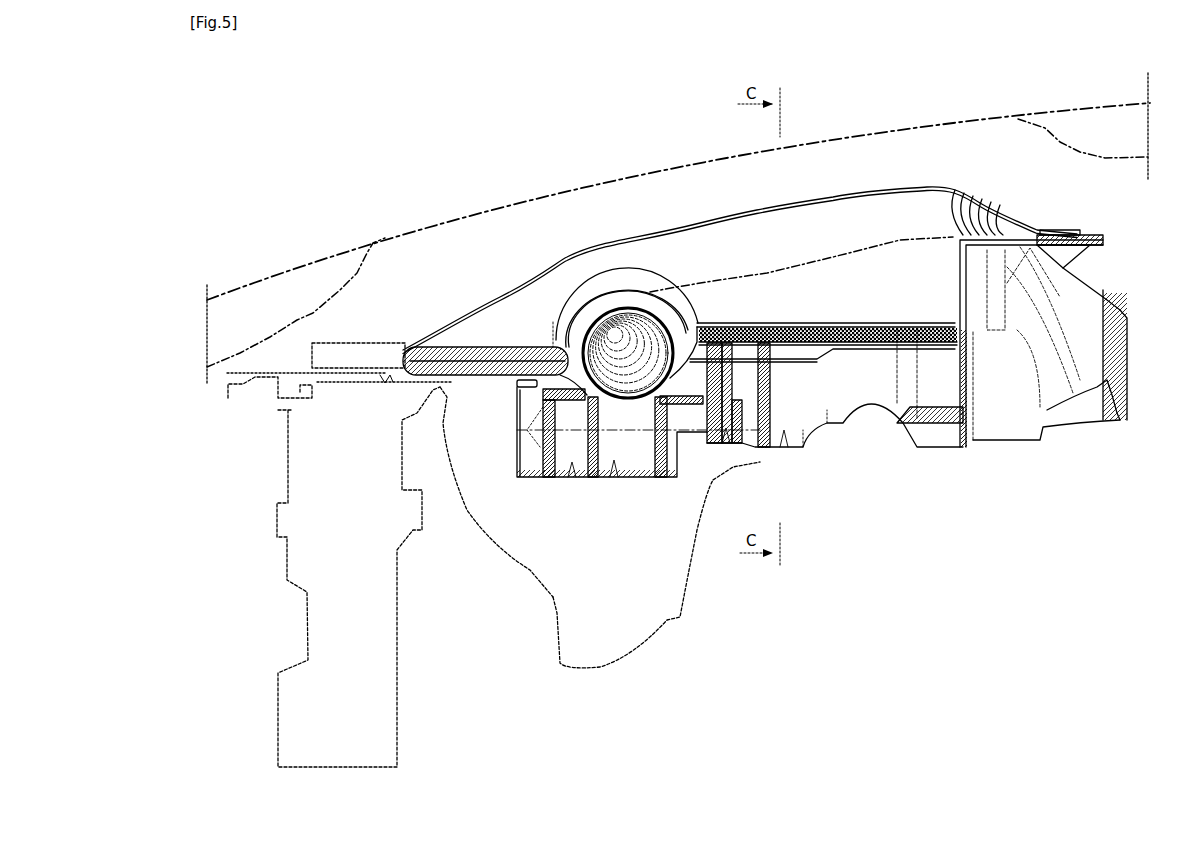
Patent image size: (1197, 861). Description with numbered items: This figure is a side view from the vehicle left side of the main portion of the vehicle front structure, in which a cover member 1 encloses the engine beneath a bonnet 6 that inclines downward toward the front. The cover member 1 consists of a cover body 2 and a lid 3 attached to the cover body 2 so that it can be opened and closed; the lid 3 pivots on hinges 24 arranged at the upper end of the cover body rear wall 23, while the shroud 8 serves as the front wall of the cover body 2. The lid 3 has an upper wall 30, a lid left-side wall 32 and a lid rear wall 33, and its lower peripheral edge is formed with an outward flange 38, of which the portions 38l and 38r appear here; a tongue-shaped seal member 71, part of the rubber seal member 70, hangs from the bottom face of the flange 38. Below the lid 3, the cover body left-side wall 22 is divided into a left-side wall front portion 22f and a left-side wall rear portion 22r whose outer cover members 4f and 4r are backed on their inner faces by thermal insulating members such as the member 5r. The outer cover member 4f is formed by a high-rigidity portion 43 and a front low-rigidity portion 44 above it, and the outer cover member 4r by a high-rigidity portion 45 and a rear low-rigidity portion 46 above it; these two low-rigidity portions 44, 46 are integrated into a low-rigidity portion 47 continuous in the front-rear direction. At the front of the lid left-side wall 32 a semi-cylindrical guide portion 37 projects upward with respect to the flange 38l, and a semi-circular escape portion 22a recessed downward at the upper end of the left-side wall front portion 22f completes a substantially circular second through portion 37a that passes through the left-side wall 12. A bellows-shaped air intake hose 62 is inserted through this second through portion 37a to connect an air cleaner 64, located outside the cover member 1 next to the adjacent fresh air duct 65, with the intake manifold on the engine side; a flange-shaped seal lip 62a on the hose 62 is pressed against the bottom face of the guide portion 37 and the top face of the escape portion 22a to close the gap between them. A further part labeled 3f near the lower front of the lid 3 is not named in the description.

The cover member 1 is at (443, 297).
The cover body 2 is at (1076, 342).
The lid 3 is at (740, 255).
The front wall 3f is at (637, 480).
The outer cover member 4f is at (577, 478).
The outer cover member 4r is at (823, 420).
The thermal insulating member 5r is at (807, 446).
The bonnet 6 is at (487, 208).
The shroud 8 is at (282, 462).
The left-side wall 12 is at (748, 384).
The cover body left-side wall 22 is at (748, 423).
The escape portion 22a is at (571, 411).
The left-side wall front portion 22f is at (638, 464).
The left-side wall rear portion 22r is at (825, 394).
The cover body rear wall 23 is at (1150, 336).
The hinges 24 is at (1087, 232).
The upper wall 30 is at (760, 225).
The lid left-side wall 32 is at (817, 262).
The lid rear wall 33 is at (998, 208).
The guide portion 37 is at (617, 295).
The second through portion 37a is at (588, 308).
The flange 38 is at (896, 317).
The flange 38l is at (870, 318).
The flange 38r is at (1003, 225).
The high-rigidity portion 43 is at (641, 478).
The front low-rigidity portion 44 is at (697, 362).
The high-rigidity portion 45 is at (940, 446).
The rear low-rigidity portion 46 is at (787, 360).
The low-rigidity portion 47 is at (765, 305).
The air intake hose 62 is at (562, 343).
The seal lip 62a is at (690, 318).
The air cleaner 64 is at (673, 623).
The fresh air duct 65 is at (357, 335).
The seal member 70 is at (665, 473).
The seal member 71 is at (443, 392).